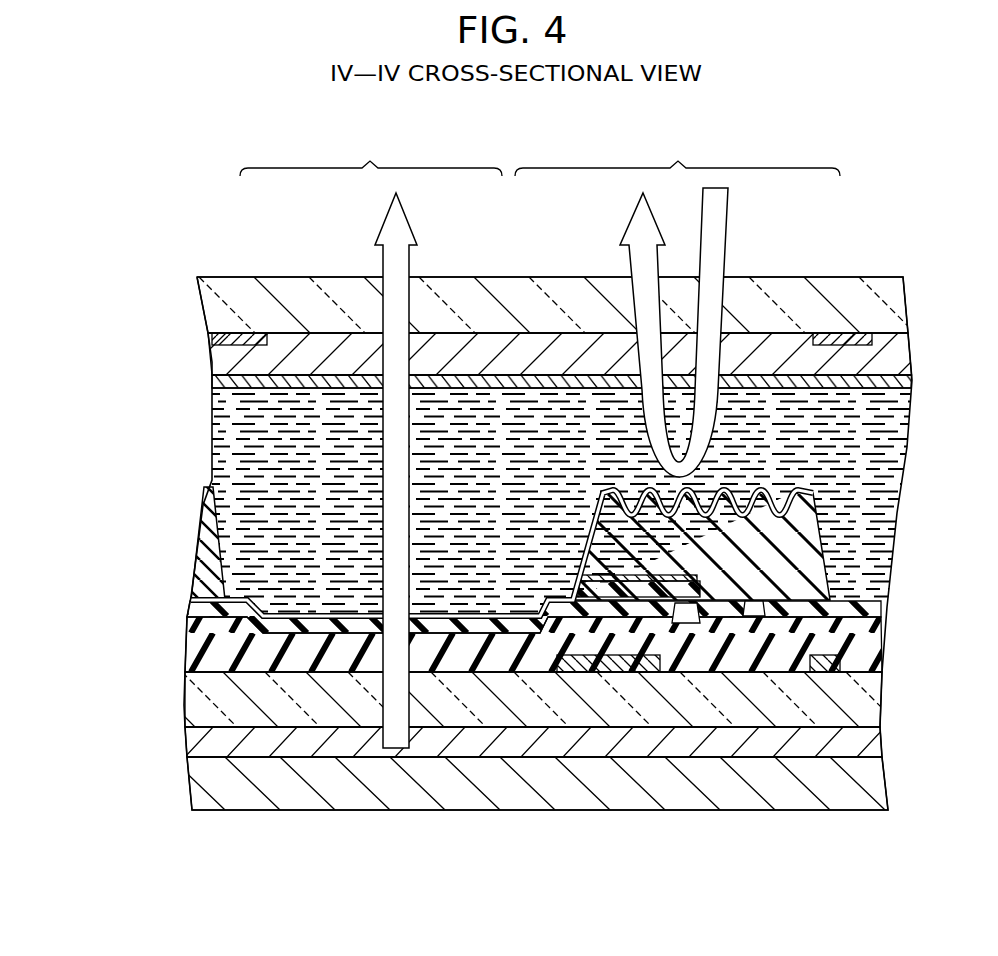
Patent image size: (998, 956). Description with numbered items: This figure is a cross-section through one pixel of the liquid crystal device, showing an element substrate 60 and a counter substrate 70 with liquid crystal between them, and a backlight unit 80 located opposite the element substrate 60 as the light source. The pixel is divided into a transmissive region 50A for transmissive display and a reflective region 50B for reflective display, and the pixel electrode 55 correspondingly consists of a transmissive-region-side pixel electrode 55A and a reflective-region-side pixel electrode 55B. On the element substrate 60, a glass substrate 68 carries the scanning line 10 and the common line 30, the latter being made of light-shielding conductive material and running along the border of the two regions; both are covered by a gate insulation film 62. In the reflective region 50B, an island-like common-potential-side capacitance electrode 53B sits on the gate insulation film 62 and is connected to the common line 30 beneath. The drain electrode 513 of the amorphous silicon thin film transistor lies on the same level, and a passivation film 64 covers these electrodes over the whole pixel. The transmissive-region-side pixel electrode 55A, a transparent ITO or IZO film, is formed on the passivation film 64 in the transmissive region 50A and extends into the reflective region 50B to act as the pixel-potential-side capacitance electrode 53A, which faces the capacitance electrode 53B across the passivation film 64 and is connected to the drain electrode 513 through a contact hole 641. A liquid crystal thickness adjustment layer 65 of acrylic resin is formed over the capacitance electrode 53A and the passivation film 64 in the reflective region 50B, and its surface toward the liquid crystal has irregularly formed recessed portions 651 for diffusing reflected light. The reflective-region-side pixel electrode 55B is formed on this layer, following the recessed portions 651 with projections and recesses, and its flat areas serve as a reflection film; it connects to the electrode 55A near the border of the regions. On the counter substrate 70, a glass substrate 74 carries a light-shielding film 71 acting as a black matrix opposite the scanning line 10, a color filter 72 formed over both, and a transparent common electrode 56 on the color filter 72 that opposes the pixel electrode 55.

The scanning line 10 is at (823, 665).
The common line 30 is at (605, 663).
The transmissive region 50A is at (371, 438).
The reflective region 50B is at (677, 302).
The drain electrode 513 is at (753, 623).
The pixel-potential-side capacitance electrode 53A is at (690, 576).
The common-potential-side capacitance electrode 53B is at (688, 623).
The pixel electrode 55 is at (517, 551).
The transmissive-region-side pixel electrode 55A is at (333, 610).
The reflective-region-side pixel electrode 55B is at (810, 490).
The common electrode 56 is at (212, 385).
The element substrate 60 is at (508, 626).
The gate insulation film 62 is at (208, 638).
The passivation film 64 is at (195, 612).
The contact hole 641 is at (790, 574).
The liquid crystal thickness adjustment layer 65 is at (205, 527).
The recessed portions 651 is at (756, 452).
The glass substrate 68 is at (213, 687).
The counter substrate 70 is at (508, 316).
The light-shielding film 71 is at (207, 338).
The color filter 72 is at (232, 363).
The glass substrate 74 is at (205, 300).
The backlight unit 80 is at (291, 785).